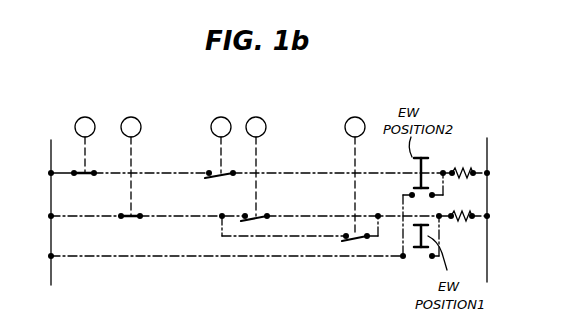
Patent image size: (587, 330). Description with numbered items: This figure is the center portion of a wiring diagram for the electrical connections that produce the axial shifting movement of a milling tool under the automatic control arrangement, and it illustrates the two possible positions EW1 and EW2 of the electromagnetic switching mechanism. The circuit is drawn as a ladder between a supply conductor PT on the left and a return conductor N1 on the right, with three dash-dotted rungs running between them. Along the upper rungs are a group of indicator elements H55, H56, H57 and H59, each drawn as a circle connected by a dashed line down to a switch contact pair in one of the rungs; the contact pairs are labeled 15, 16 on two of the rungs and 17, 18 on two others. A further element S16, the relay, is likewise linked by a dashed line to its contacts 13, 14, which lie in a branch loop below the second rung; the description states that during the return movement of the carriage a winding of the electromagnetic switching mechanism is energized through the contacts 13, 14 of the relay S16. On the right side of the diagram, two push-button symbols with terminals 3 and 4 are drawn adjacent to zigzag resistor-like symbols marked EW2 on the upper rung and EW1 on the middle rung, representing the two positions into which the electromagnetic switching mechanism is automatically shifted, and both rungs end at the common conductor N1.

The phase conductor bus PT is at (48, 152).
The neutral conductor N1 is at (487, 152).
The indicator lamp H55 is at (85, 117).
The indicator lamp H56 is at (131, 117).
The indicator lamp H57 is at (224, 110).
The indicator lamp H59 is at (256, 117).
The relay S16 is at (355, 117).
The electromagnetic switching mechanism position EW1 is at (464, 202).
The electromagnetic switching mechanism position EW2 is at (464, 159).
The push button terminal 3 is at (407, 231).
The push button terminal 4 is at (431, 231).
The relay contact 13 is at (346, 229).
The relay contact 14 is at (369, 229).
The switch contact 15 is at (106, 201).
The switch contact 16 is at (107, 201).
The switch contact 17 is at (227, 187).
The switch contact 18 is at (251, 187).